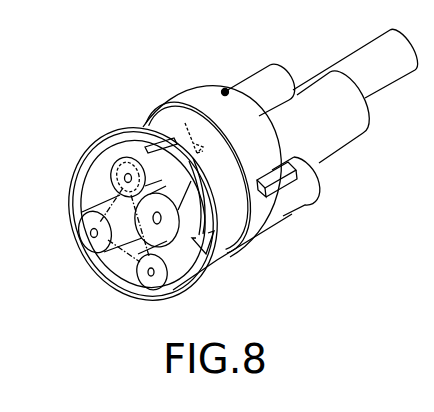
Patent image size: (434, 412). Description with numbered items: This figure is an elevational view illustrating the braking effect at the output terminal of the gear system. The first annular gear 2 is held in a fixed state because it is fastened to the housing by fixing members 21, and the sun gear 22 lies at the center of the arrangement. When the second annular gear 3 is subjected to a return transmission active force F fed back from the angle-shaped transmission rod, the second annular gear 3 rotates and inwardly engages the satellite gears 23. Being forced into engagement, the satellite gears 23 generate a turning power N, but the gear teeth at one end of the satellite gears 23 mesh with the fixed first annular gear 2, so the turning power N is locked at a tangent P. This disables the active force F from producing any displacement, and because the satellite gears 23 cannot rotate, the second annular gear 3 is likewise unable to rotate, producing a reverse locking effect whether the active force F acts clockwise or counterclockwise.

The first annular gear 2 is at (268, 228).
The second annular gear 3 is at (132, 138).
The fixing members 21 is at (282, 180).
The sun gear 22 is at (329, 132).
The satellite gears 23 is at (123, 168).
The turning power N is at (186, 120).
The tangent P is at (224, 89).
The return transmission active force F is at (217, 257).